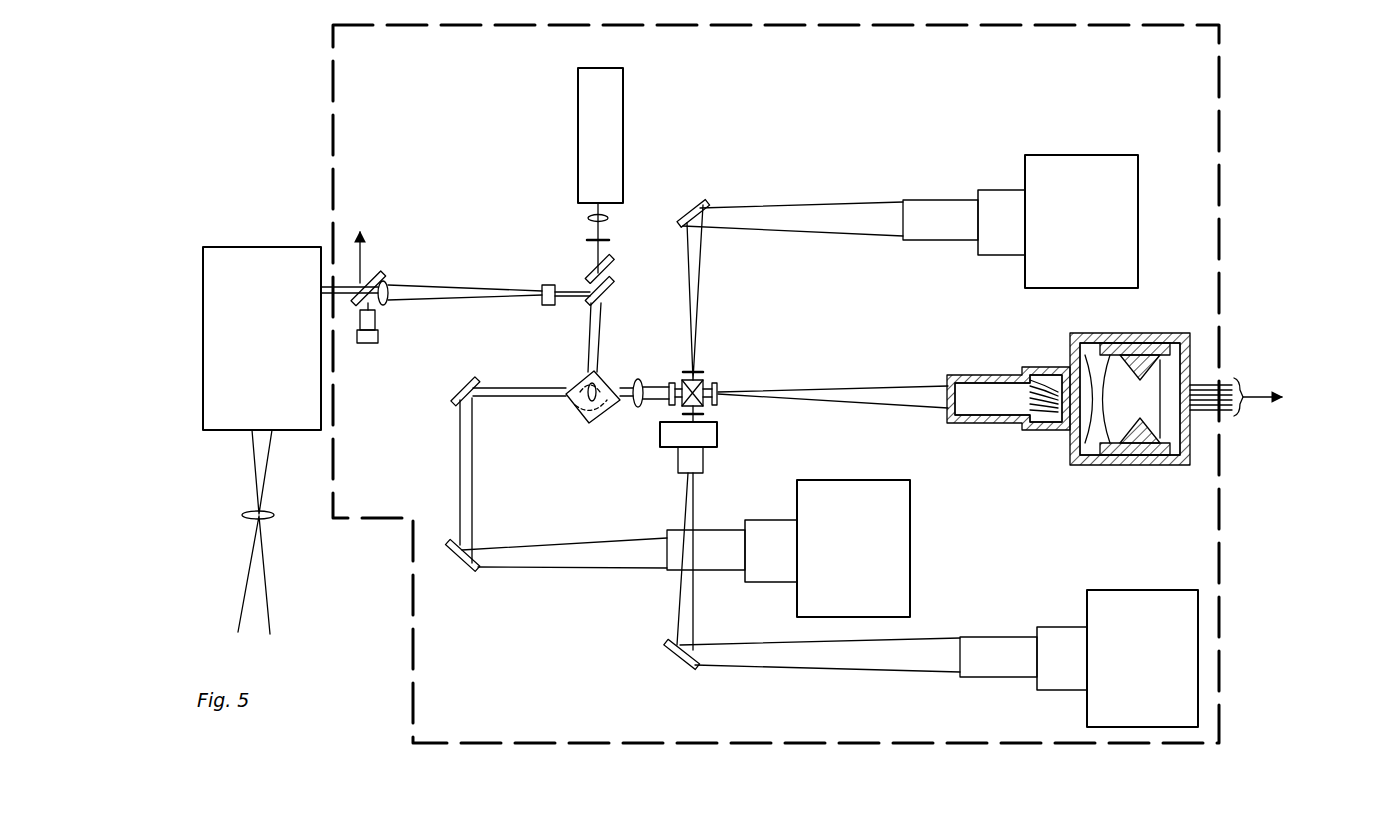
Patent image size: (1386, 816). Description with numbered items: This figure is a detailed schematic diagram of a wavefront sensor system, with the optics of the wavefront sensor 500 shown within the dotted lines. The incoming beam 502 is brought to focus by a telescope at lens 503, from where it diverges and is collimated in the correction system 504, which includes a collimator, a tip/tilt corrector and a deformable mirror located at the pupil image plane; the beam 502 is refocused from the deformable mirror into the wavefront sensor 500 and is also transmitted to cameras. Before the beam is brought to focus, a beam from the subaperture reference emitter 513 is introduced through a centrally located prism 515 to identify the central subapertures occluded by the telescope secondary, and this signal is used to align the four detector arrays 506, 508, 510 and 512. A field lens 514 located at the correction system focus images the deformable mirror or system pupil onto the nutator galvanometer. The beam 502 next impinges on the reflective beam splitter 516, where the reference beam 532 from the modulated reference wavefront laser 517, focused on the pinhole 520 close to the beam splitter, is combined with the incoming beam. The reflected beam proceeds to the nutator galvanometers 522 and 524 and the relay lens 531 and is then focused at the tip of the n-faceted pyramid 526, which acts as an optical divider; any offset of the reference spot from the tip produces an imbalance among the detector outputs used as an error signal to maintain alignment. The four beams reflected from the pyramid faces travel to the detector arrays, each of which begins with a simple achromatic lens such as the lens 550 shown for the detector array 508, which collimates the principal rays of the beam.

The wavefront sensor 500 is at (776, 384).
The incoming beam 502 is at (343, 280).
The lens 503 is at (244, 518).
The correction system 504 is at (300, 431).
The detector array 506 is at (1139, 168).
The detector array 508 is at (1196, 447).
The detector array 510 is at (1120, 590).
The detector array 512 is at (911, 507).
The subaperture reference emitter 513 is at (356, 337).
The field lens 514 is at (548, 306).
The prism 515 is at (365, 270).
The reflective beam splitter 516 is at (611, 294).
The modulated reference wavefront laser 517 is at (624, 108).
The pinhole 520 is at (588, 242).
The nutator galvanometer 522 is at (590, 470).
The nutator galvanometer 524 is at (605, 383).
The n-faceted pyramid 526 is at (705, 380).
The relay lens 531 is at (636, 406).
The reference beam 532 is at (587, 218).
The achromatic lens 550 is at (960, 423).